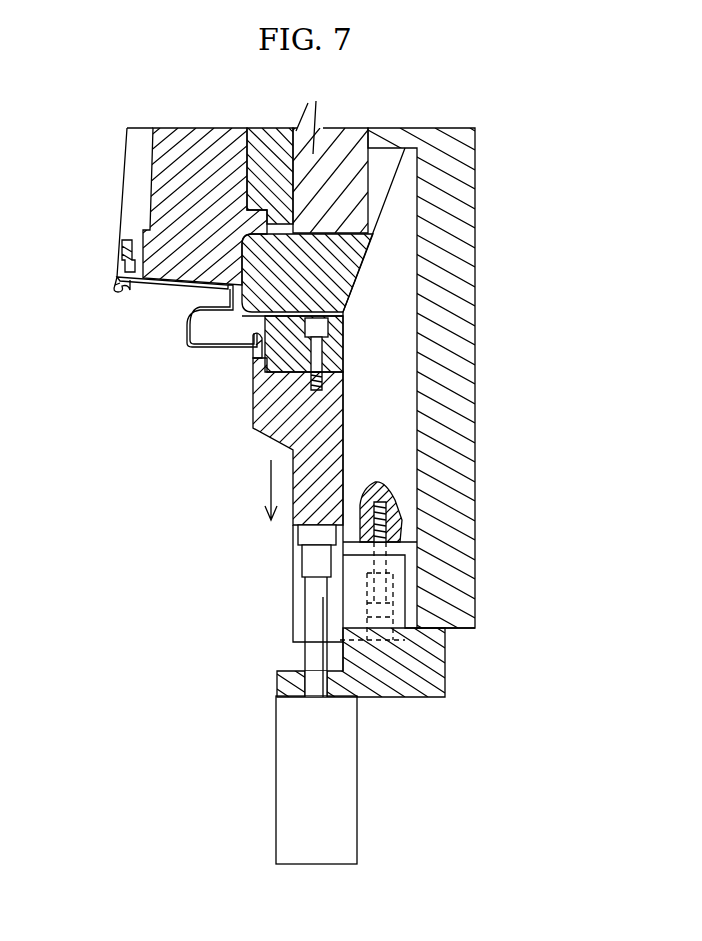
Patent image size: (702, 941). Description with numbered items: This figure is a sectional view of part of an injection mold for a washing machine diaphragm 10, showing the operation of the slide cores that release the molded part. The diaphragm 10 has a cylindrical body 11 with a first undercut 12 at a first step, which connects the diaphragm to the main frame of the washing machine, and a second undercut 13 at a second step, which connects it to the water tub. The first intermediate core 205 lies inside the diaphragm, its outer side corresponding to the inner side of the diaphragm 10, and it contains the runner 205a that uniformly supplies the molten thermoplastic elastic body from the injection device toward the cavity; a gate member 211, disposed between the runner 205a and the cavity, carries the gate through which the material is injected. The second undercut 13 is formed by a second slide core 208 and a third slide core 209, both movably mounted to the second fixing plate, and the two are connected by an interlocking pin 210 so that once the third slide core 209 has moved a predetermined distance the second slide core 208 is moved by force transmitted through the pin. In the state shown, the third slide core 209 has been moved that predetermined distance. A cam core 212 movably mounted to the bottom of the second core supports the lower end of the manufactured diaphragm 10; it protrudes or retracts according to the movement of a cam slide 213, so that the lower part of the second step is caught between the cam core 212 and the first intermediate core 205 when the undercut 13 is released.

The first intermediate core 205 is at (146, 153).
The runner 205a is at (132, 181).
The gate member 211 is at (124, 250).
The washing machine diaphragm 10 is at (116, 281).
The first undercut 12 is at (120, 292).
The cylindrical body 11 is at (162, 284).
The cam core 212 is at (195, 337).
The second undercut 13 is at (255, 348).
The interlocking pin 210 is at (312, 350).
The third slide core 209 is at (248, 428).
The second slide core 208 is at (343, 330).
The cam slide 213 is at (397, 371).